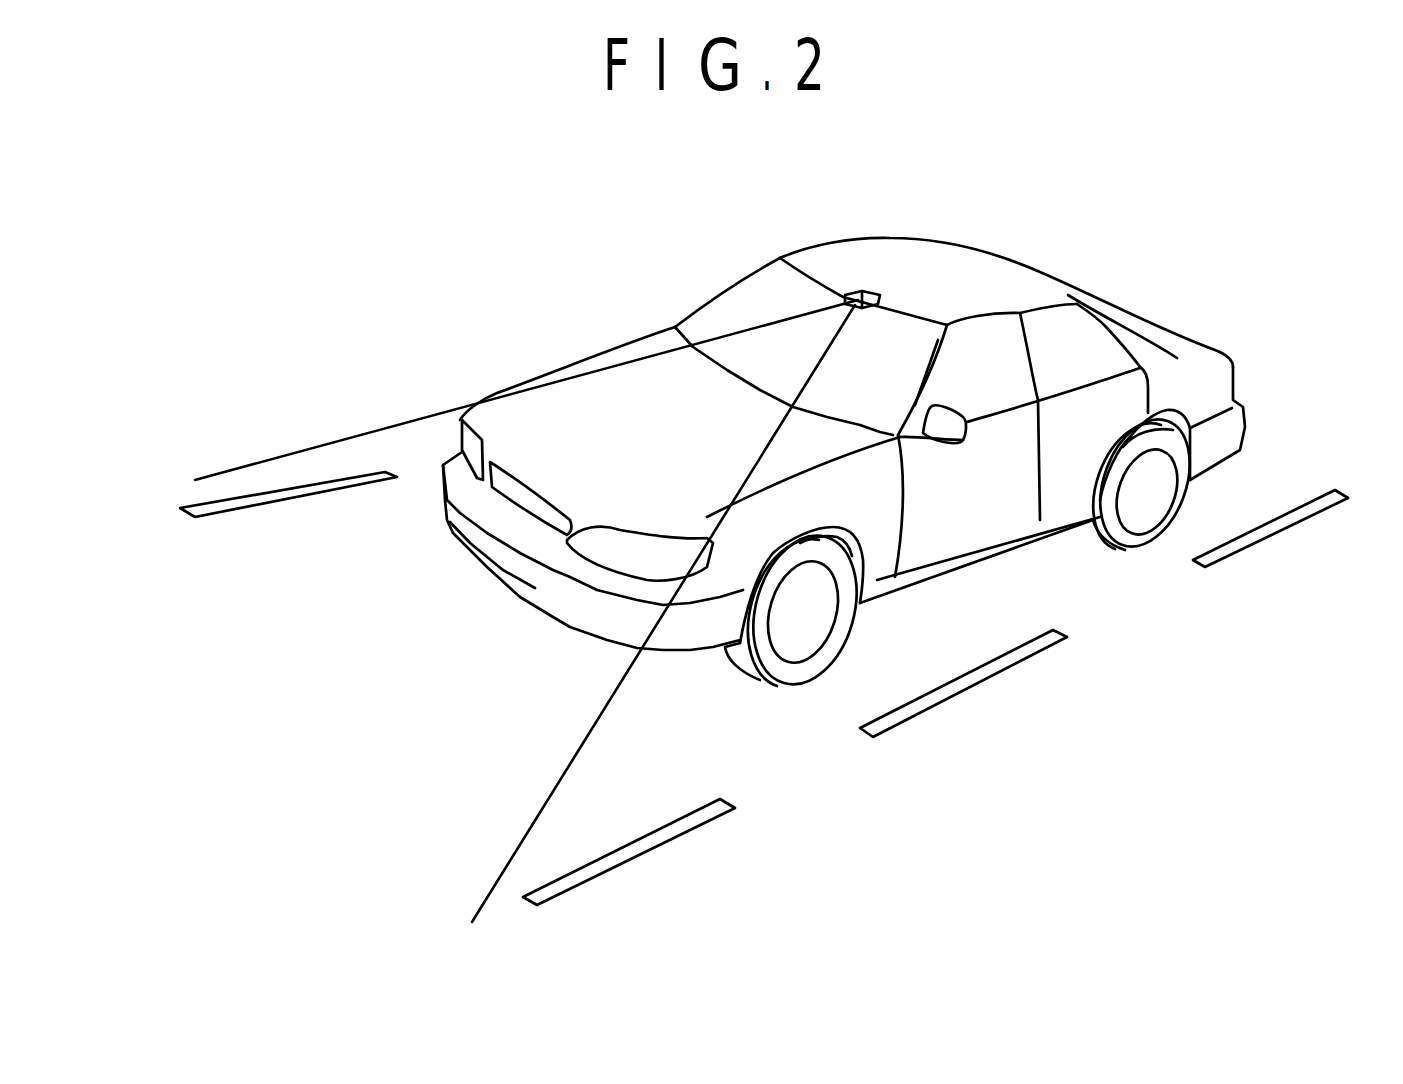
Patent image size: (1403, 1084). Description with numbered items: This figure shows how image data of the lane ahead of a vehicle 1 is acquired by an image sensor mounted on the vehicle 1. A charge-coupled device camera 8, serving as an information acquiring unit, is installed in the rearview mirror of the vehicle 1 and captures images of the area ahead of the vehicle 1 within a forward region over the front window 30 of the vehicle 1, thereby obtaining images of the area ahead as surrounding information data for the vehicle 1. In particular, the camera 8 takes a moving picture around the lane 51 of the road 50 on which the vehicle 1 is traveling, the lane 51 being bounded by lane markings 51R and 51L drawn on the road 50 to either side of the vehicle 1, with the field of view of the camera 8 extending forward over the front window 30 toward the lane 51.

The vehicle 1 is at (844, 438).
The CCD camera 8 is at (862, 292).
The front window 30 is at (730, 300).
The road 50 is at (978, 828).
The lane 51 is at (738, 748).
The right lane marking 51R is at (282, 493).
The left lane marking 51L is at (990, 670).